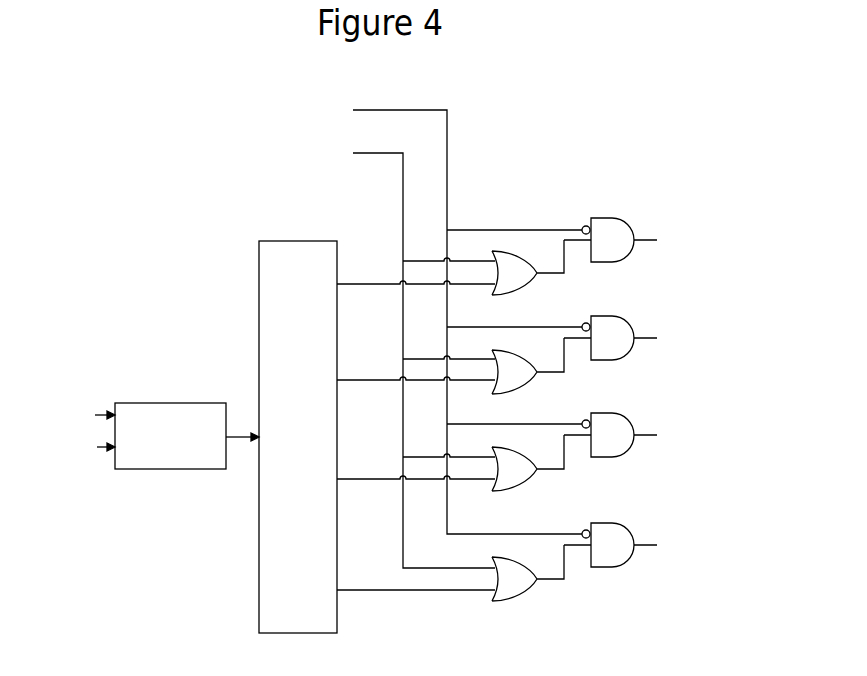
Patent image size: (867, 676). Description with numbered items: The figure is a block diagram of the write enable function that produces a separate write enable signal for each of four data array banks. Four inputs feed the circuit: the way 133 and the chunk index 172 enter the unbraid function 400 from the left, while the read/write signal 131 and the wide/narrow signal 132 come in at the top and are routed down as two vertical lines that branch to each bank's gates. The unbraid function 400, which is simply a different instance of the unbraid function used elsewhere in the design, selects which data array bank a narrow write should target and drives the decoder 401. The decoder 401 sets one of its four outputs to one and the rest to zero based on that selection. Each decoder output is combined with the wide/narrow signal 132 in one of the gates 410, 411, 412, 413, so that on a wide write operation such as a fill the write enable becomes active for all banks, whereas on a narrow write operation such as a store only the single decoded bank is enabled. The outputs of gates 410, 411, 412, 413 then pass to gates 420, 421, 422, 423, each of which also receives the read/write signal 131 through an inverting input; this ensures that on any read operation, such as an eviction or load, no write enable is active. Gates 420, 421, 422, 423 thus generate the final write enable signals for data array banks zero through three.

The read/write signal 131 is at (427, 110).
The wide/narrow signal 132 is at (403, 175).
The way 133 is at (97, 449).
The chunk index 172 is at (95, 413).
The unbraid function 400 is at (148, 403).
The decoder 401 is at (290, 241).
The gate 410 is at (508, 253).
The gate 411 is at (520, 356).
The gate 412 is at (508, 452).
The gate 413 is at (510, 560).
The gate 420 is at (612, 218).
The gate 421 is at (617, 317).
The gate 422 is at (620, 413).
The gate 423 is at (620, 523).